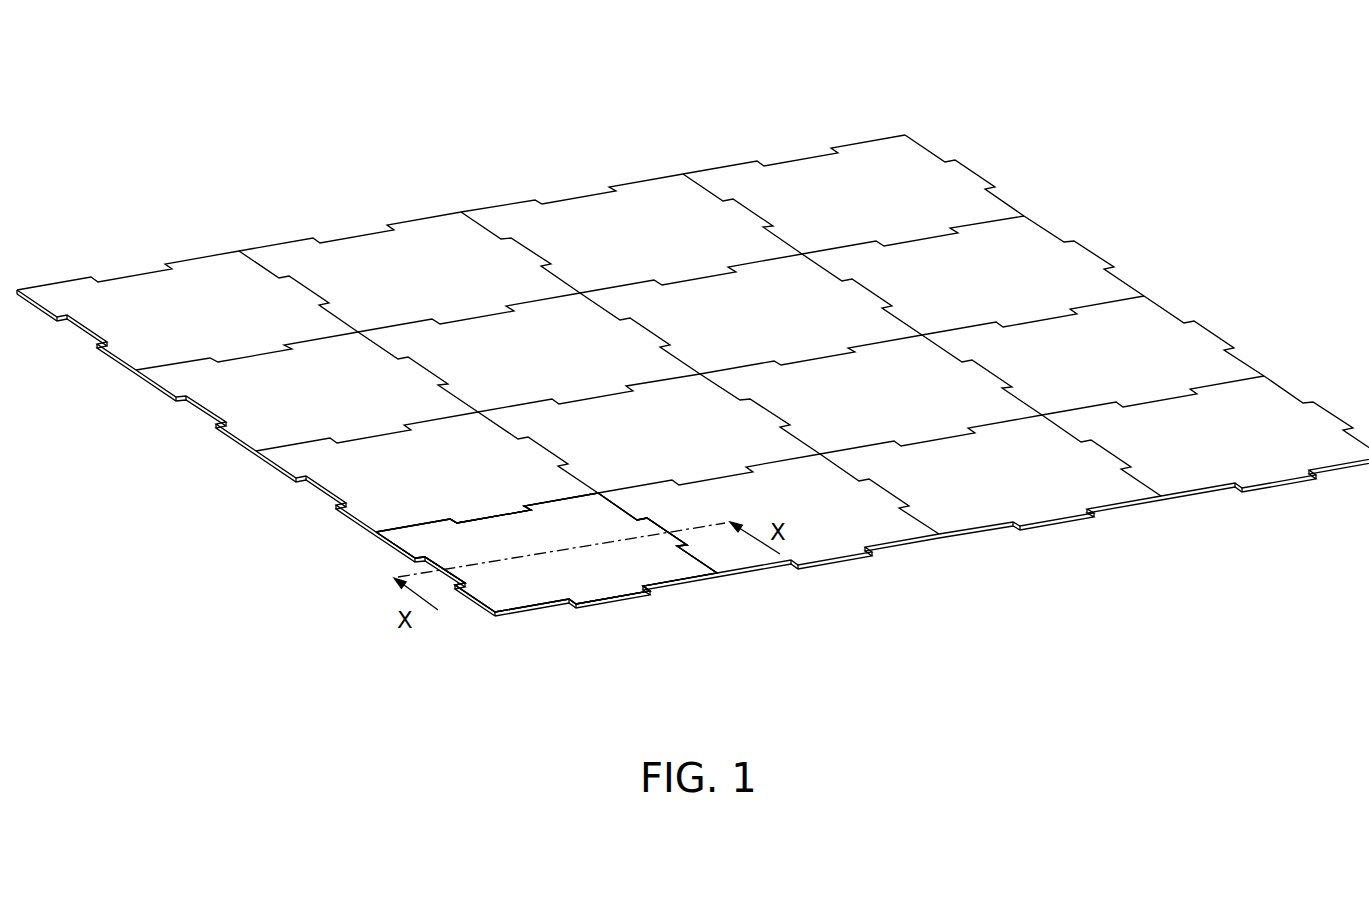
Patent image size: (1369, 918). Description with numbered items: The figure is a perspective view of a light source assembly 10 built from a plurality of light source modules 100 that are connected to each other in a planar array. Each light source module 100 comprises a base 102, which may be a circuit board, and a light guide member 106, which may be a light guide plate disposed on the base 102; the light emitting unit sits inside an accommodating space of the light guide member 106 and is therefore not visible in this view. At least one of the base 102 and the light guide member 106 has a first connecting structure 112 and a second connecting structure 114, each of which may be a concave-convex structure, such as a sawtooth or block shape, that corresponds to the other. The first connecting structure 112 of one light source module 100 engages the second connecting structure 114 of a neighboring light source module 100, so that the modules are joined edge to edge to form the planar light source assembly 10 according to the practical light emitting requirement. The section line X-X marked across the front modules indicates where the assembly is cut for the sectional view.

The light source assembly 10 is at (440, 110).
The light source module 100 is at (697, 588).
The base 102 is at (537, 614).
The light guide member 106 is at (427, 540).
The first connecting structure 112 is at (618, 605).
The second connecting structure 114 is at (493, 514).